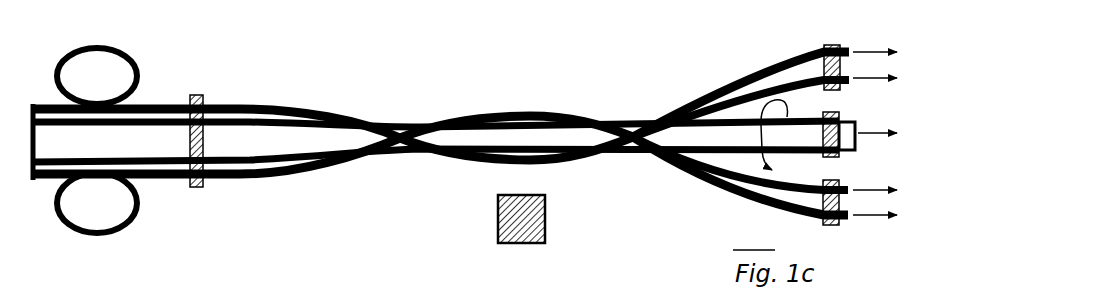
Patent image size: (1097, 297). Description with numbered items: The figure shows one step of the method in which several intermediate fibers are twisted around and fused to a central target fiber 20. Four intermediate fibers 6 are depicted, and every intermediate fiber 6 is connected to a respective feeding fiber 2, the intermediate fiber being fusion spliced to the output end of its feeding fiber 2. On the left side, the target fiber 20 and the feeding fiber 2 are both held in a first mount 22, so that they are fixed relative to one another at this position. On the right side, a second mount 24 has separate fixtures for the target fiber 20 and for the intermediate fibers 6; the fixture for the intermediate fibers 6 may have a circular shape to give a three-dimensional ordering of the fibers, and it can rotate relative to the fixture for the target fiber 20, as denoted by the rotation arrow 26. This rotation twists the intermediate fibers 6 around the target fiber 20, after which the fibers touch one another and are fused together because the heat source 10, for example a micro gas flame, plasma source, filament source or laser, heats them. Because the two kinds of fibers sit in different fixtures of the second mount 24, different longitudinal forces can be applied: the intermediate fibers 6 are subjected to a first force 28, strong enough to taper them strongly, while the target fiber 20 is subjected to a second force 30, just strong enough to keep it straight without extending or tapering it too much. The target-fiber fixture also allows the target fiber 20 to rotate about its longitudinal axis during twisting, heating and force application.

The feeding fiber 2 is at (137, 105).
The target fiber 20 is at (137, 140).
The first mount 22 is at (203, 102).
The intermediate fiber 6 is at (333, 120).
The heat source 10 is at (545, 238).
The second mount 24 is at (827, 110).
The rotation arrow 26 is at (752, 108).
The first force 28 is at (860, 80).
The second force 30 is at (868, 135).